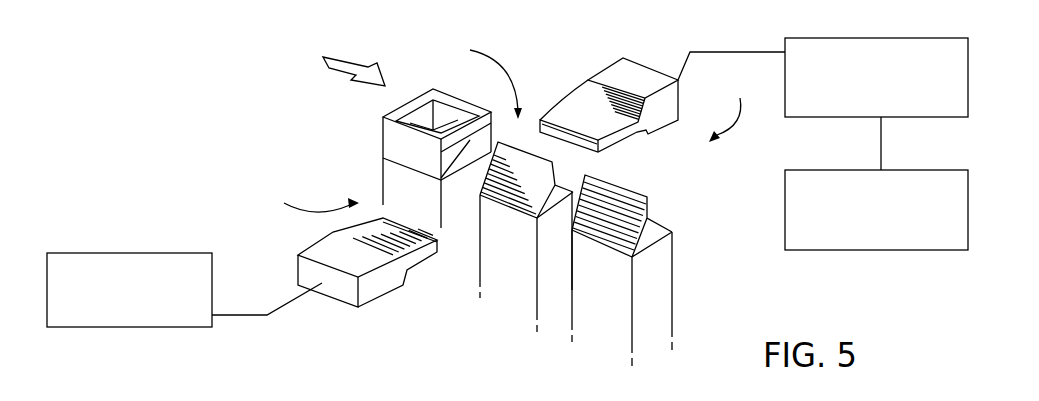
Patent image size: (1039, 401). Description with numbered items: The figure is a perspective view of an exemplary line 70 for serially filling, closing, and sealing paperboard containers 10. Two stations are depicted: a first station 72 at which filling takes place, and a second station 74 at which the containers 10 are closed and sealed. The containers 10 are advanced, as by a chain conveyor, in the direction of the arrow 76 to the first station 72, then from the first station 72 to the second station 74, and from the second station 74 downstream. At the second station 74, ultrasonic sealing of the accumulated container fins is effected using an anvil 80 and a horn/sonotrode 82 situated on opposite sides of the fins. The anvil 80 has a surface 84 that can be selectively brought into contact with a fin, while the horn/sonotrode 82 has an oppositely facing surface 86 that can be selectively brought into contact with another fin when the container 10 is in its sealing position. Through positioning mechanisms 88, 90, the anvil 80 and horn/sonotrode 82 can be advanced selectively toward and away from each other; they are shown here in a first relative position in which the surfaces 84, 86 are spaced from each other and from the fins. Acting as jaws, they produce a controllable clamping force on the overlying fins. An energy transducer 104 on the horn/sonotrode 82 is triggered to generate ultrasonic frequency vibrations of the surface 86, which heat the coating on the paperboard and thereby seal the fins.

The container 10 is at (376, 177).
The line 70 is at (734, 106).
The first station 72 is at (306, 193).
The second station 74 is at (479, 76).
The arrow 76 is at (330, 67).
The anvil 80 is at (322, 250).
The horn/sonotrode 82 is at (617, 67).
The surface 84 is at (402, 223).
The surface 86 is at (575, 142).
The positioning mechanism 88 is at (75, 253).
The positioning mechanism 90 is at (968, 90).
The energy transducer 104 is at (968, 190).